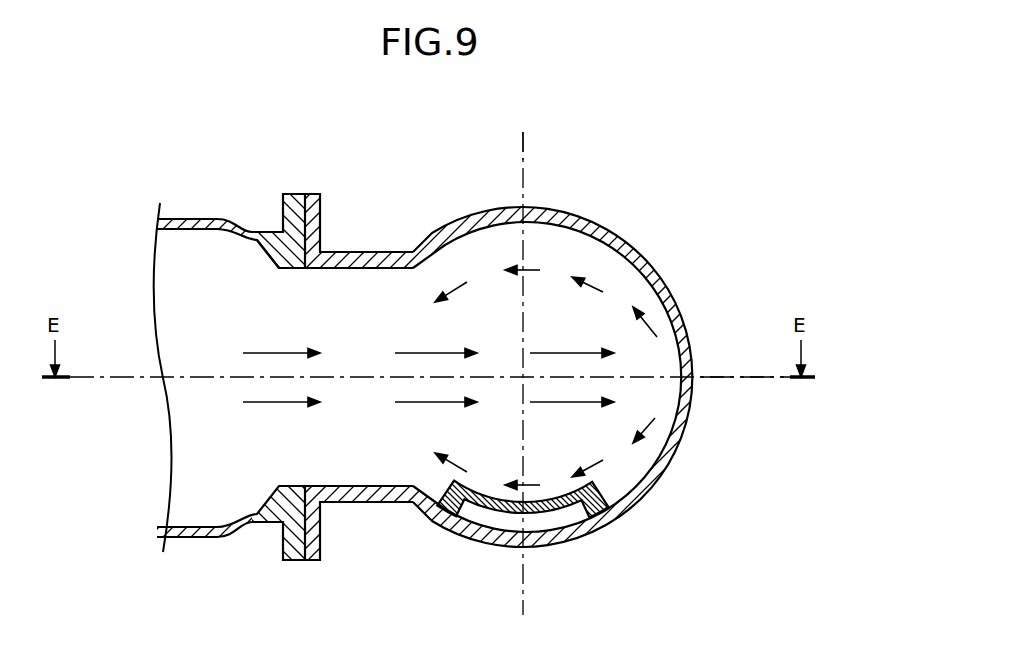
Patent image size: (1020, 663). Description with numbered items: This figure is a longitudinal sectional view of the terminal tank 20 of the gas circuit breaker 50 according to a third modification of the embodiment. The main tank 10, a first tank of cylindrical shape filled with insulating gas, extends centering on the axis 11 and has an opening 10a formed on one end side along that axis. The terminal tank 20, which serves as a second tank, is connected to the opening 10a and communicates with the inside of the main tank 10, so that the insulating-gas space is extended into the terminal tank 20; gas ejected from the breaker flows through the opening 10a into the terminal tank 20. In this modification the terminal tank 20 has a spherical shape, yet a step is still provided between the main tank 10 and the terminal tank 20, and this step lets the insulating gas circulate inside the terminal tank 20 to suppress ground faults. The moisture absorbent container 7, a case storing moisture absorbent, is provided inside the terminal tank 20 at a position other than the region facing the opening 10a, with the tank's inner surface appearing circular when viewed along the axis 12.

The gas circuit breaker 50 is at (390, 156).
The main tank 10 is at (197, 219).
The opening 10a is at (262, 250).
The axis 12 is at (523, 146).
The terminal tank 20 is at (616, 236).
The axis 11 is at (735, 377).
The moisture absorbent container 7 is at (609, 489).